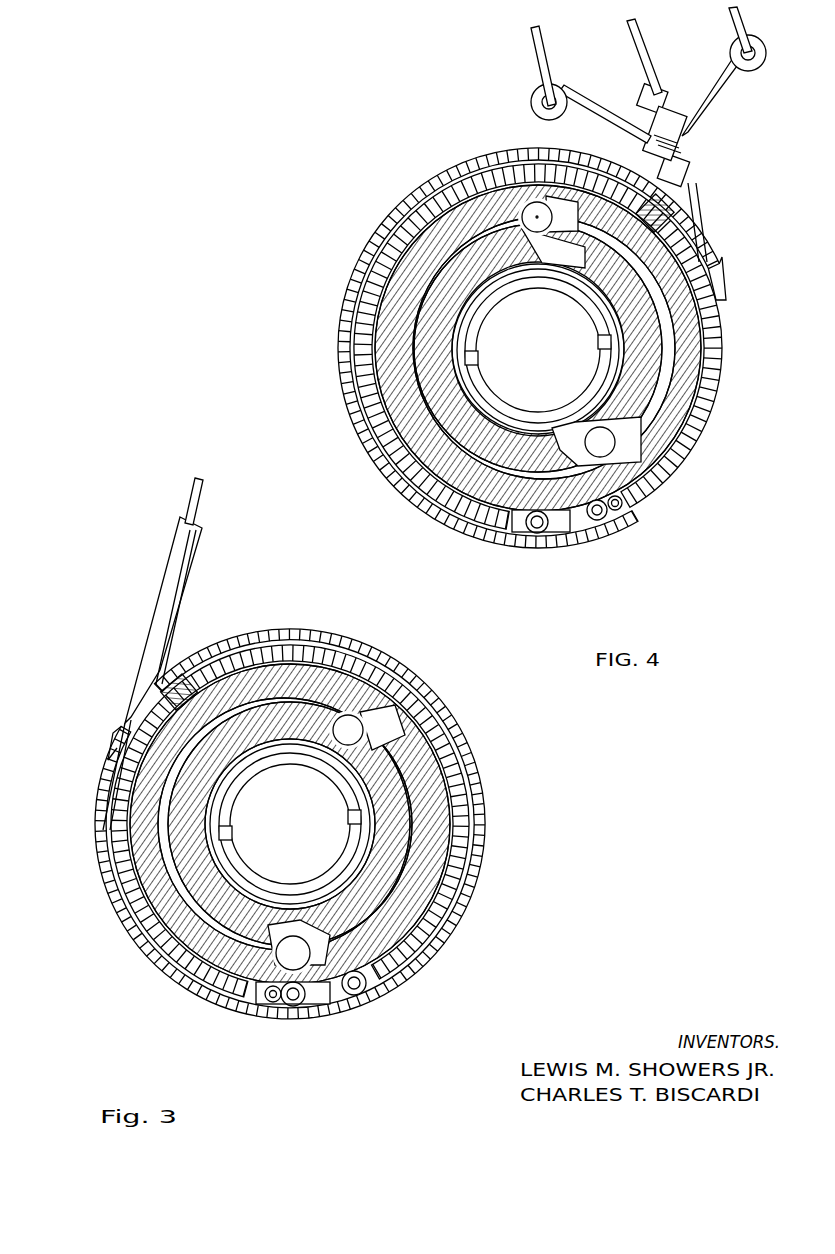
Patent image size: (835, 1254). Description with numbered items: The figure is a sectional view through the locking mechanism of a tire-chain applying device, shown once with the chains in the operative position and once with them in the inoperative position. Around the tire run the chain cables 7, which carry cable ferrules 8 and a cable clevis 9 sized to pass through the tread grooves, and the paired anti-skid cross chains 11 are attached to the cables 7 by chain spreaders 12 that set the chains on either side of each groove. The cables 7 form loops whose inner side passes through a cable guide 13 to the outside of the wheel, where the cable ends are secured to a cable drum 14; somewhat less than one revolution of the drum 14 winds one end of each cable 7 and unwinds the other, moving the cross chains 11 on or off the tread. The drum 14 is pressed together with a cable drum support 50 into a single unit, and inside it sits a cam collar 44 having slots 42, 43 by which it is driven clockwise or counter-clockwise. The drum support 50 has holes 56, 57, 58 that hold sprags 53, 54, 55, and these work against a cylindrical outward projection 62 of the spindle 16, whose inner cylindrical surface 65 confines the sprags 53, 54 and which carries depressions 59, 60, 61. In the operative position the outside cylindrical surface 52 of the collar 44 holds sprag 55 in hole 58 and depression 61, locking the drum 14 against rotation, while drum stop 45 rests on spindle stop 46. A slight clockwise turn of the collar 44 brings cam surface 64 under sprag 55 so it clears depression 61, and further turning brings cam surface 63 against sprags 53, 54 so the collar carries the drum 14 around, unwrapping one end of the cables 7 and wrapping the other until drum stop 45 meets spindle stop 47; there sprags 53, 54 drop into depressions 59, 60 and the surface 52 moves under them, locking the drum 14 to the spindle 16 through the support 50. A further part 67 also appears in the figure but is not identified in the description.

In FIG. 4, the chain cables 7 is at (630, 32).
In FIG. 3, the chain cables 7 is at (195, 493).
In FIG. 4, the cable ferrules 8 is at (645, 90).
In FIG. 3, the cable ferrules 8 is at (182, 683).
In FIG. 4, the cable clevis 9 is at (686, 145).
In FIG. 4, the anti-skid cross chains 11 is at (536, 70).
In FIG. 4, the chain spreaders 12 is at (712, 97).
In FIG. 3, the cable guide 13 is at (179, 540).
In FIG. 4, the cable drum 14 is at (700, 338).
In FIG. 3, the cable drum 14 is at (165, 710).
In FIG. 4, the spindle 16 is at (567, 530).
In FIG. 3, the spindle 16 is at (363, 980).
In FIG. 4, the slot 42 is at (600, 343).
In FIG. 3, the slot 42 is at (352, 817).
In FIG. 4, the slot 43 is at (476, 358).
In FIG. 3, the slot 43 is at (230, 836).
In FIG. 4, the cam collar 44 is at (630, 368).
In FIG. 3, the cam collar 44 is at (380, 793).
In FIG. 4, the drum stop 45 is at (620, 507).
In FIG. 3, the drum stop 45 is at (273, 1003).
In FIG. 4, the spindle stop 46 is at (535, 528).
In FIG. 3, the spindle stop 46 is at (294, 1006).
In FIG. 4, the spindle stop 47 is at (613, 515).
In FIG. 3, the spindle stop 47 is at (330, 992).
In FIG. 4, the cable drum support 50 is at (634, 407).
In FIG. 3, the cable drum support 50 is at (380, 892).
In FIG. 4, the outside cylindrical surface 52 is at (432, 297).
In FIG. 3, the outside cylindrical surface 52 is at (180, 803).
In FIG. 4, the sprag 53 is at (525, 202).
In FIG. 3, the sprag 53 is at (368, 722).
In FIG. 4, the sprag 54 is at (484, 120).
In FIG. 3, the sprag 54 is at (410, 622).
In FIG. 4, the sprag 55 is at (622, 454).
In FIG. 3, the sprag 55 is at (312, 972).
In FIG. 4, the hole 56 is at (351, 150).
In FIG. 3, the hole 56 is at (368, 727).
In FIG. 4, the hole 57 is at (507, 227).
In FIG. 3, the hole 57 is at (489, 676).
In FIG. 4, the hole 58 is at (613, 447).
In FIG. 3, the hole 58 is at (250, 960).
In FIG. 4, the depression 59 is at (536, 205).
In FIG. 4, the depression 60 is at (633, 77).
In FIG. 3, the depression 61 is at (290, 975).
In FIG. 4, the cylindrical outward projection 62 is at (392, 343).
In FIG. 3, the cylindrical outward projection 62 is at (200, 922).
In FIG. 4, the cam surface 63 is at (578, 263).
In FIG. 3, the cam surface 63 is at (313, 730).
In FIG. 4, the cam surface 64 is at (564, 440).
In FIG. 3, the cam surface 64 is at (400, 920).
In FIG. 4, the inner cylindrical surface 65 is at (420, 410).
In FIG. 3, the inner cylindrical surface 65 is at (415, 835).
In FIG. 4, the brake band 67 is at (722, 300).
In FIG. 3, the brake band 67 is at (470, 745).